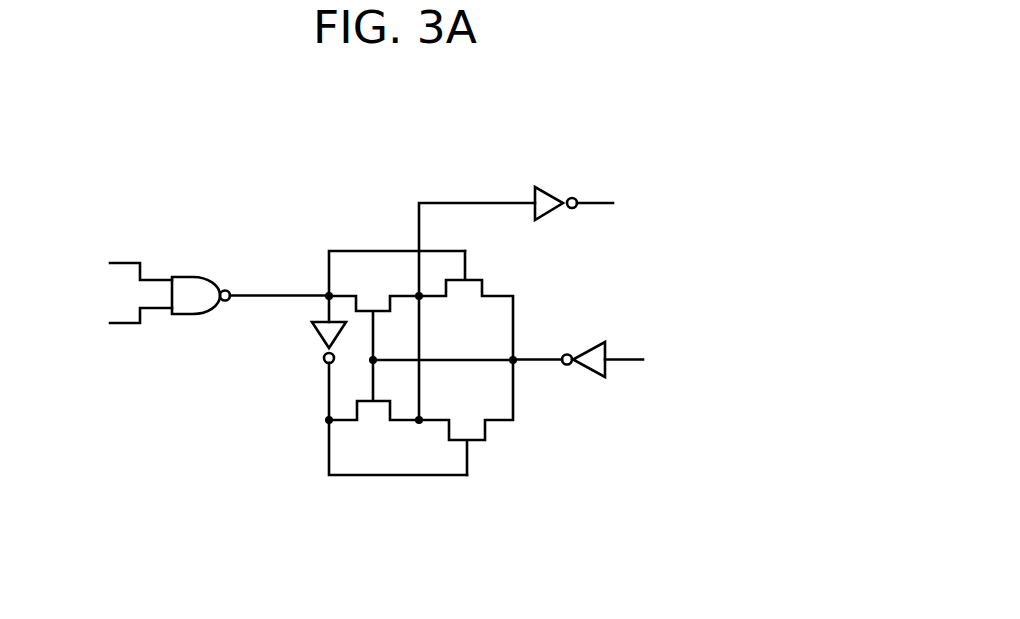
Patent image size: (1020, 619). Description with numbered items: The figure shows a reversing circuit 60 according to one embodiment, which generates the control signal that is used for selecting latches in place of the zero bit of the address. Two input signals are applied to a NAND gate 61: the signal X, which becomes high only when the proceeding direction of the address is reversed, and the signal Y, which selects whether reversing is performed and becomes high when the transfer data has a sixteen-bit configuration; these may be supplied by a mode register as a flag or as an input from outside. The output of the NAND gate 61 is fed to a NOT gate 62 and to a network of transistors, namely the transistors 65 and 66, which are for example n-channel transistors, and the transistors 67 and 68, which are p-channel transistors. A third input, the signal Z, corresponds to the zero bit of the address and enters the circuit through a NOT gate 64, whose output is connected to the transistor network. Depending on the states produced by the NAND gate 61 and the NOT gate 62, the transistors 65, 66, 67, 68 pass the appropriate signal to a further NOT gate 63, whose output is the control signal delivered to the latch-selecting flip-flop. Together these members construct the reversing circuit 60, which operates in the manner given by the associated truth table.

The reversing circuit 60 is at (485, 172).
The NAND gate 61 is at (204, 273).
The NOT gate 62 is at (308, 343).
The NOT gate 63 is at (552, 188).
The NOT gate 64 is at (582, 342).
The transistor 65 is at (376, 306).
The transistor 66 is at (475, 272).
The transistor 67 is at (382, 397).
The transistor 68 is at (478, 448).